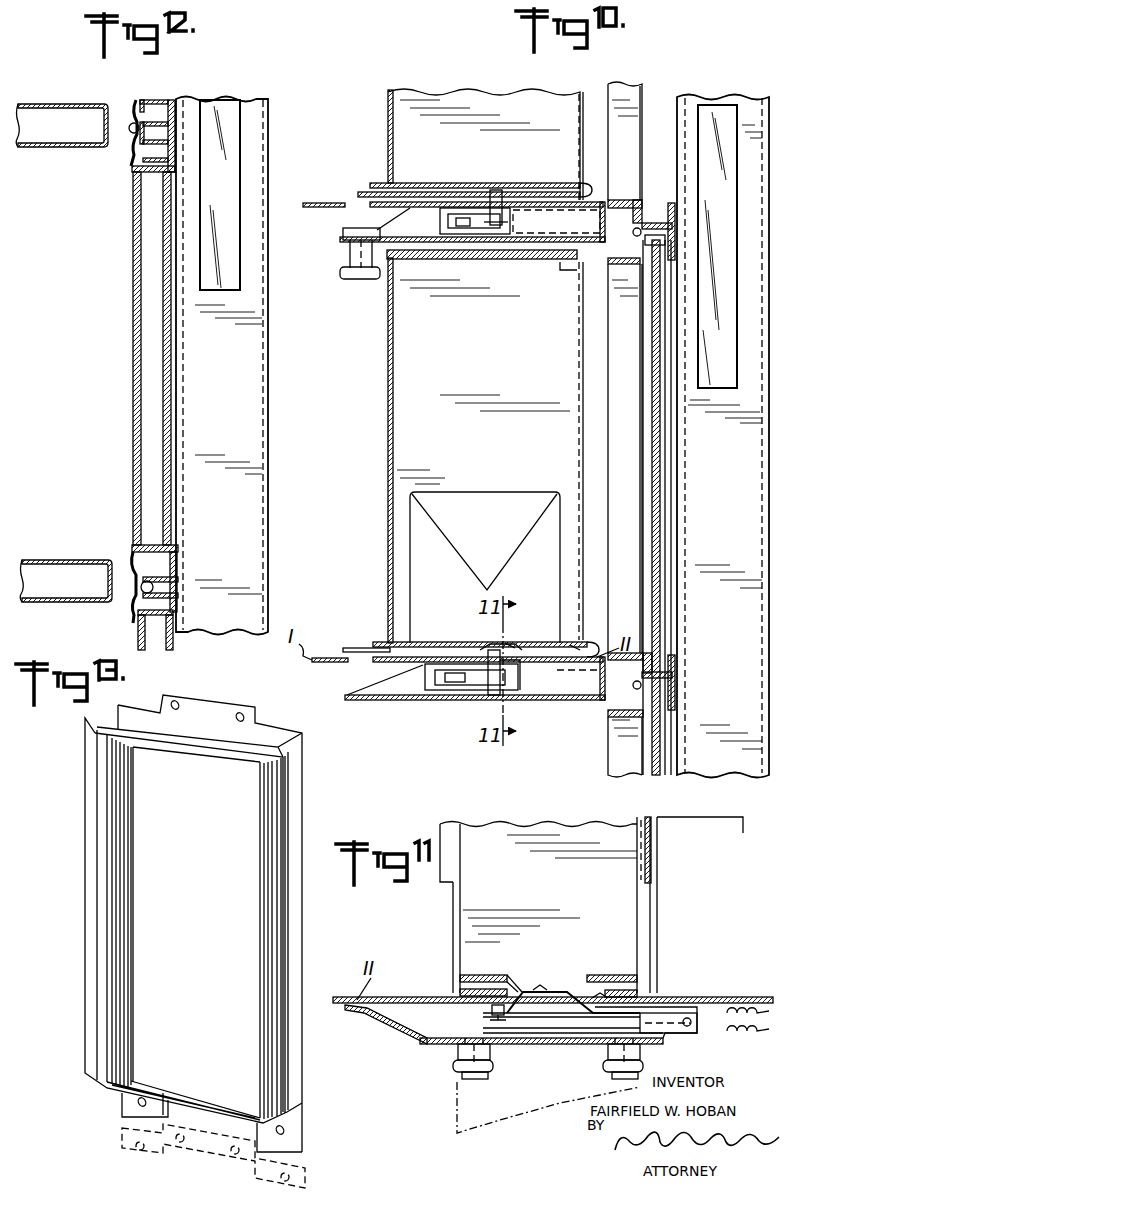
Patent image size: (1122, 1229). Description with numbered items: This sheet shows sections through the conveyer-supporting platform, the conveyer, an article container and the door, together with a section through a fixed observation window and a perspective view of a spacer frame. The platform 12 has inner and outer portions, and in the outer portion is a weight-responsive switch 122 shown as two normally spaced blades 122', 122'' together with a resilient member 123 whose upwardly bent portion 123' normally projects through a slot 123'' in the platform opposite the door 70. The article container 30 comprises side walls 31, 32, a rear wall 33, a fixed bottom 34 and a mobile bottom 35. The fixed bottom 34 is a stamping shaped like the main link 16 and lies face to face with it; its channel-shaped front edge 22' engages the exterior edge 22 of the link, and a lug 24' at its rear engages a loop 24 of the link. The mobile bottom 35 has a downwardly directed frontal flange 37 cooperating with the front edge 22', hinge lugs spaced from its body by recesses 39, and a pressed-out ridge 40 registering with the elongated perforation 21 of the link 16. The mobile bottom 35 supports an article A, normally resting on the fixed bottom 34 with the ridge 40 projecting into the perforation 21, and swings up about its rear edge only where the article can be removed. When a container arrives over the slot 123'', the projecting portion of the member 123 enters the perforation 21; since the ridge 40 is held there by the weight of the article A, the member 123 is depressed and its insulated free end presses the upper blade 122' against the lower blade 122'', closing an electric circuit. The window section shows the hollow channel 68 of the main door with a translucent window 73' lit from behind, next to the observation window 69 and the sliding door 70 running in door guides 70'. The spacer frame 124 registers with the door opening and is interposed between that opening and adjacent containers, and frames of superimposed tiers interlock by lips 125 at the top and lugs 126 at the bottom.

In FIG. 12, the conveyer-supporting platform 12 is at (66, 78).
In FIG. 10, the conveyer-supporting platform 12 is at (323, 200).
In FIG. 11, the conveyer-supporting platform 12 is at (738, 994).
In FIG. 10, the main link 16 is at (363, 648).
In FIG. 11, the main link 16 is at (487, 1000).
In FIG. 10, the elongated perforation 21 is at (516, 644).
In FIG. 11, the elongated perforation 21 is at (488, 1004).
In FIG. 10, the exterior edge 22 is at (590, 612).
In FIG. 10, the channel-shaped front edge 22' is at (617, 628).
In FIG. 10, the loop 24 is at (375, 609).
In FIG. 10, the lug 24' is at (347, 621).
In FIG. 10, the article container 30 is at (464, 92).
In FIG. 11, the article container 30 is at (452, 908).
In FIG. 11, the side wall 31 is at (457, 924).
In FIG. 10, the side wall 32 is at (503, 374).
In FIG. 11, the side wall 32 is at (642, 916).
In FIG. 10, the rear wall 33 is at (388, 128).
In FIG. 10, the fixed container bottom 34 is at (565, 662).
In FIG. 11, the fixed container bottom 34 is at (460, 985).
In FIG. 10, the mobile container bottom 35 is at (451, 182).
In FIG. 11, the mobile container bottom 35 is at (463, 982).
In FIG. 10, the frontal flange 37 is at (578, 183).
In FIG. 10, the recesses 39 is at (528, 662).
In FIG. 11, the recesses 39 is at (548, 1058).
In FIG. 10, the ridge 40 is at (501, 650).
In FIG. 11, the ridge 40 is at (561, 990).
In FIG. 12, the channel-shaped formation 68 is at (272, 135).
In FIG. 10, the channel-shaped formation 68 is at (768, 148).
In FIG. 12, the observation window 69 is at (133, 318).
In FIG. 10, the sliding door 70 is at (690, 507).
In FIG. 10, the door guides 70' is at (708, 669).
In FIG. 12, the translucent window 73' is at (255, 195).
In FIG. 10, the translucent window 73' is at (749, 246).
In FIG. 10, the weight-responsive switch 122 is at (472, 467).
In FIG. 11, the weight-responsive switch 122 is at (557, 1037).
In FIG. 10, the upper switch blade 122' is at (470, 473).
In FIG. 11, the upper switch blade 122' is at (561, 1051).
In FIG. 10, the lower switch blade 122'' is at (468, 470).
In FIG. 11, the lower switch blade 122'' is at (573, 1059).
In FIG. 10, the resilient member 123 is at (475, 652).
In FIG. 11, the resilient member 123 is at (514, 1039).
In FIG. 10, the upwardly bent portion 123' is at (509, 185).
In FIG. 11, the upwardly bent portion 123' is at (546, 967).
In FIG. 10, the slot 123'' is at (533, 693).
In FIG. 11, the slot 123'' is at (620, 970).
In FIG. 10, the spacer frame 124 is at (606, 318).
In FIG. 13, the spacer frame 124 is at (306, 806).
In FIG. 13, the lips 125 is at (203, 708).
In FIG. 13, the lugs 126 is at (132, 1103).
In FIG. 10, the article A is at (488, 492).